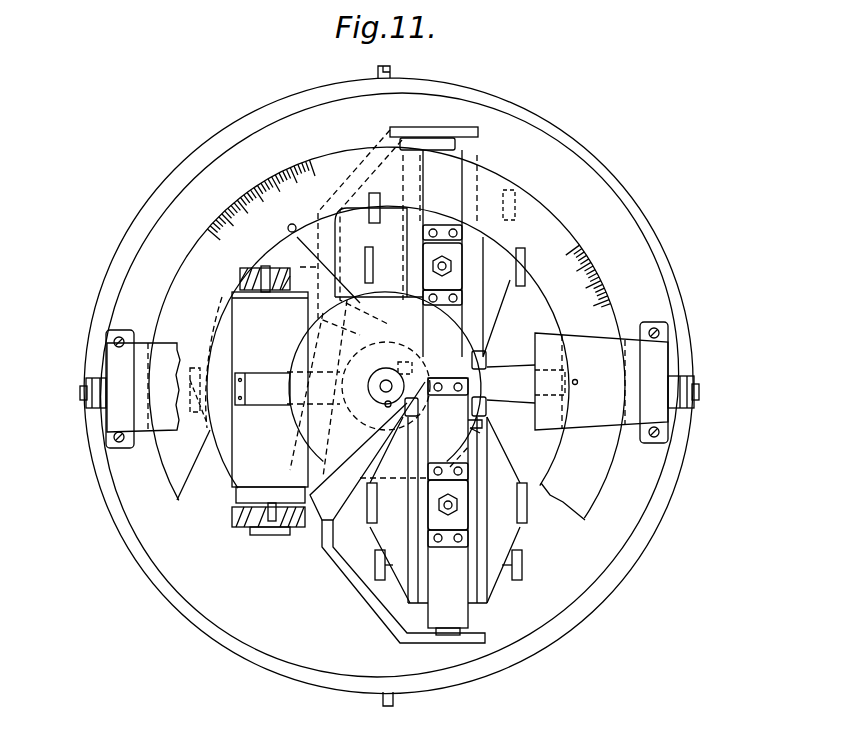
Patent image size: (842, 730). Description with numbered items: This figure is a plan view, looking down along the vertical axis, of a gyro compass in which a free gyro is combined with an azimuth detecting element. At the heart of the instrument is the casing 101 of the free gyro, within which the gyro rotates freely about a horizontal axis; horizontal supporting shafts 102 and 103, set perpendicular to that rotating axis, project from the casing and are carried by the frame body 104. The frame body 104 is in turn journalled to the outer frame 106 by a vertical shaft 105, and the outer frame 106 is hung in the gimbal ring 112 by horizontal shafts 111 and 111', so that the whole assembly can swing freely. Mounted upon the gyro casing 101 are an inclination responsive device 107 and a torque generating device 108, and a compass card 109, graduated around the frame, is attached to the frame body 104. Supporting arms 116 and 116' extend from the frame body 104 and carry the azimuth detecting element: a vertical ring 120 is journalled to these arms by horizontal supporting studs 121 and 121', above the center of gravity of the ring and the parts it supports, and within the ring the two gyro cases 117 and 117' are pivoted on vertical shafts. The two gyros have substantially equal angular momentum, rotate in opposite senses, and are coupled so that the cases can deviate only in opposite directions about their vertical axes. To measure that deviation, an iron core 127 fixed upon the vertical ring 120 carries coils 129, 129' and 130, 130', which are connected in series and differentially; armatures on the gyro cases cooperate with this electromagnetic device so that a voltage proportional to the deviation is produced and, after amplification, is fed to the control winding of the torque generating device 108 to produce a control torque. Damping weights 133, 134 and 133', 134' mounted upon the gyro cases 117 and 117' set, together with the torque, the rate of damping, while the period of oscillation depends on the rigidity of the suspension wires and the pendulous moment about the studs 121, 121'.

The casing for a free gyro 101 is at (226, 447).
The horizontal supporting shaft 102 is at (272, 527).
The horizontal supporting shaft 103 is at (274, 266).
The frame body 104 is at (302, 344).
The vertical shaft 105 is at (368, 386).
The outer frame 106 is at (158, 433).
The inclination responsive device 107 is at (273, 403).
The torque generating device 108 is at (238, 498).
The compass card 109 is at (250, 188).
The horizontal shaft 111 is at (683, 382).
The horizontal shaft 111' is at (88, 389).
The gimbal ring 112 is at (556, 150).
The supporting arm 116 is at (403, 581).
The supporting arm 116' is at (360, 223).
The gyro case 117 is at (454, 510).
The gyro case 117' is at (481, 253).
The vertical ring 120 is at (470, 615).
The horizontal supporting stud 121 is at (440, 650).
The horizontal supporting stud 121' is at (434, 128).
The iron core 127 is at (487, 426).
The coil 129 is at (497, 350).
The coil 129' is at (468, 409).
The coil 130 is at (394, 361).
The coil 130' is at (376, 411).
The damping weight 133 is at (533, 565).
The damping weight 133' is at (541, 202).
The damping weight 134 is at (368, 556).
The damping weight 134' is at (359, 218).